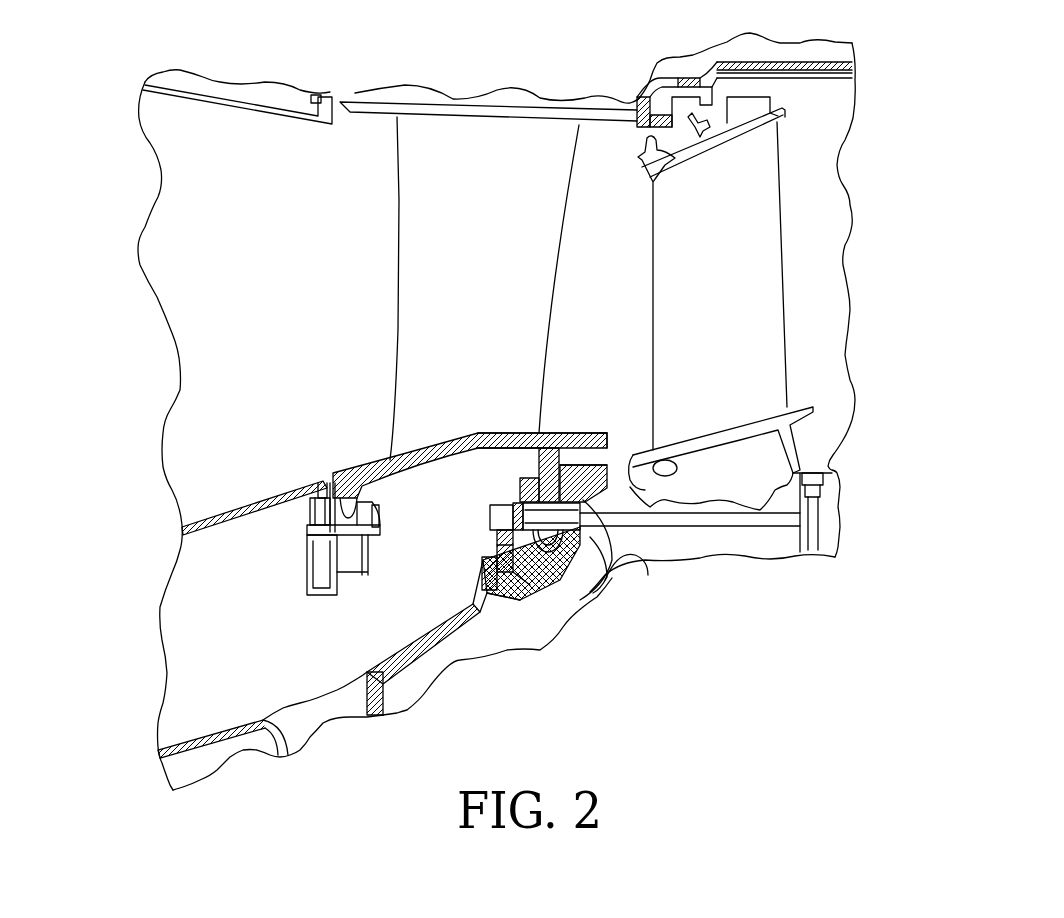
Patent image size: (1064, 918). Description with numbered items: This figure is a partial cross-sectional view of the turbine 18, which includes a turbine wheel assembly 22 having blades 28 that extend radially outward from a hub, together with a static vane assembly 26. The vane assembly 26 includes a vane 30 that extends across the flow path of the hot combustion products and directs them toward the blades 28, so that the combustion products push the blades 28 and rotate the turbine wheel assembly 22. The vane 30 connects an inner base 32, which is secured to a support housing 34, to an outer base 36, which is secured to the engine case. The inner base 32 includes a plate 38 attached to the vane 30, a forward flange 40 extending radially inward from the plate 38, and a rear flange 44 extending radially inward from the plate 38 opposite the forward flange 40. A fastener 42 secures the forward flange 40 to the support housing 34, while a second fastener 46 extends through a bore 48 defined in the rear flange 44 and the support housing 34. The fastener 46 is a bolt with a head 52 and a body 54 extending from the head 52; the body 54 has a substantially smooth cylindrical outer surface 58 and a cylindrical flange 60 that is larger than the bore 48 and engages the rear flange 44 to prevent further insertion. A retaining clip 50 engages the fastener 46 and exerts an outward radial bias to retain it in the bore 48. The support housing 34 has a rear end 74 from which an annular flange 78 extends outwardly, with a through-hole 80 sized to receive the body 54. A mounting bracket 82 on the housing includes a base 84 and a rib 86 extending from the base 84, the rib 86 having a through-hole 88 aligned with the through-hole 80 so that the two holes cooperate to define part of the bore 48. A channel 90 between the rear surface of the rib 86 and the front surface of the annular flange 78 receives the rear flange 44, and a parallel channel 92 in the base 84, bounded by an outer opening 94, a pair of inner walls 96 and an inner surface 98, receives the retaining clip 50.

The turbine 18 is at (968, 122).
The turbine wheel assembly 22 is at (820, 359).
The static vane assembly 26 is at (358, 317).
The blade 28 is at (778, 213).
The vane 30 is at (550, 213).
The inner base 32 is at (353, 446).
The support housing 34 is at (375, 668).
The outer base 36 is at (378, 120).
The plate 38 is at (438, 452).
The forward flange 40 is at (360, 488).
The fastener 42 is at (310, 525).
The rear flange 44 is at (548, 448).
The fastener 46 is at (575, 555).
The bore 48 is at (540, 580).
The retaining clip 50 is at (497, 520).
The head 52 is at (497, 503).
The body 54 is at (612, 570).
The cylindrical outer surface 58 is at (630, 527).
The flange 60 is at (520, 485).
The rear end 74 is at (605, 433).
The annular flange 78 is at (598, 478).
The through-hole 80 is at (570, 458).
The mounting bracket 82 is at (440, 576).
The base 84 is at (490, 592).
The rib 86 is at (520, 433).
The through-hole 88 is at (523, 590).
The channel 90 is at (552, 570).
The channel 92 is at (473, 620).
The outer opening 94 is at (497, 558).
The inner walls 96 is at (497, 540).
The inner surface 98 is at (493, 600).